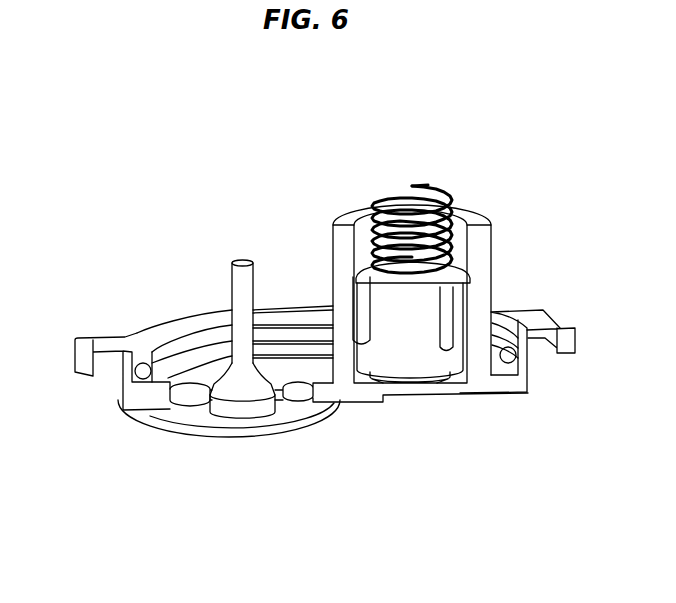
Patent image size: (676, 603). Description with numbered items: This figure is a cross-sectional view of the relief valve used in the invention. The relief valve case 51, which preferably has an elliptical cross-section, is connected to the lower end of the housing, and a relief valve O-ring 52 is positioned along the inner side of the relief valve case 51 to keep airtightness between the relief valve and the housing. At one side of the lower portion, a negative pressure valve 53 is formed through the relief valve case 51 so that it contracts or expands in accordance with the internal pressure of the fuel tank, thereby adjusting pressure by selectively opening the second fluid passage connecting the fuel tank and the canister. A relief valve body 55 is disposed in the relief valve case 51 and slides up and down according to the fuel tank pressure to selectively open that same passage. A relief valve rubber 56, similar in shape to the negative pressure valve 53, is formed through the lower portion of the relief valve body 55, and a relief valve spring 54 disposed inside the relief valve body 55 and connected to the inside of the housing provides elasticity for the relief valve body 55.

The relief valve case 51 is at (325, 321).
The relief valve O-ring 52 is at (147, 343).
The negative pressure valve 53 is at (244, 402).
The relief valve spring 54 is at (410, 183).
The relief valve body 55 is at (417, 325).
The relief valve rubber 56 is at (410, 388).